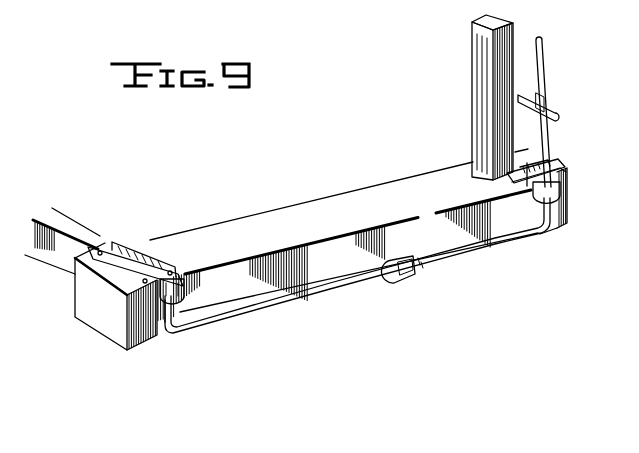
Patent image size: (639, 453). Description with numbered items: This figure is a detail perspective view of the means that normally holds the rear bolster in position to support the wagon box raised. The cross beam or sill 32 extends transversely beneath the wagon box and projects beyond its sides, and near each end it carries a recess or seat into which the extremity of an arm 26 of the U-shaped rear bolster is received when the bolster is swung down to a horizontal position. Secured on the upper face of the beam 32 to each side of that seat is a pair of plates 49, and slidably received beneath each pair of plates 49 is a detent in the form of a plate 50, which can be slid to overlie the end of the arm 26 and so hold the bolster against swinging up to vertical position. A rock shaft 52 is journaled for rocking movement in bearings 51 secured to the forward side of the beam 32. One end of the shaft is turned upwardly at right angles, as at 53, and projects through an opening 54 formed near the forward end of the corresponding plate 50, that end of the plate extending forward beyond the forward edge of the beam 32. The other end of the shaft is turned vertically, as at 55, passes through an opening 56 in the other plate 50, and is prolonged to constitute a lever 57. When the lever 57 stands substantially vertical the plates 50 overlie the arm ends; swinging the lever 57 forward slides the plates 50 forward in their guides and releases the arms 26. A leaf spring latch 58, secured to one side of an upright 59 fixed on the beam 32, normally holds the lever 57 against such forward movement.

The arm or side portion of rear bolster 26 is at (78, 231).
The cross beam or sill 32 is at (303, 203).
The plate 49 is at (147, 247).
The detent plate 50 is at (186, 285).
The bearing 51 is at (405, 283).
The rock shaft 52 is at (310, 301).
The upturned end of rock shaft 53 is at (175, 316).
The opening 54 is at (126, 308).
The vertically turned end of rock shaft 55 is at (561, 214).
The opening 56 is at (561, 189).
The lever 57 is at (548, 138).
The leaf spring latch 58 is at (553, 111).
The upright 59 is at (472, 45).